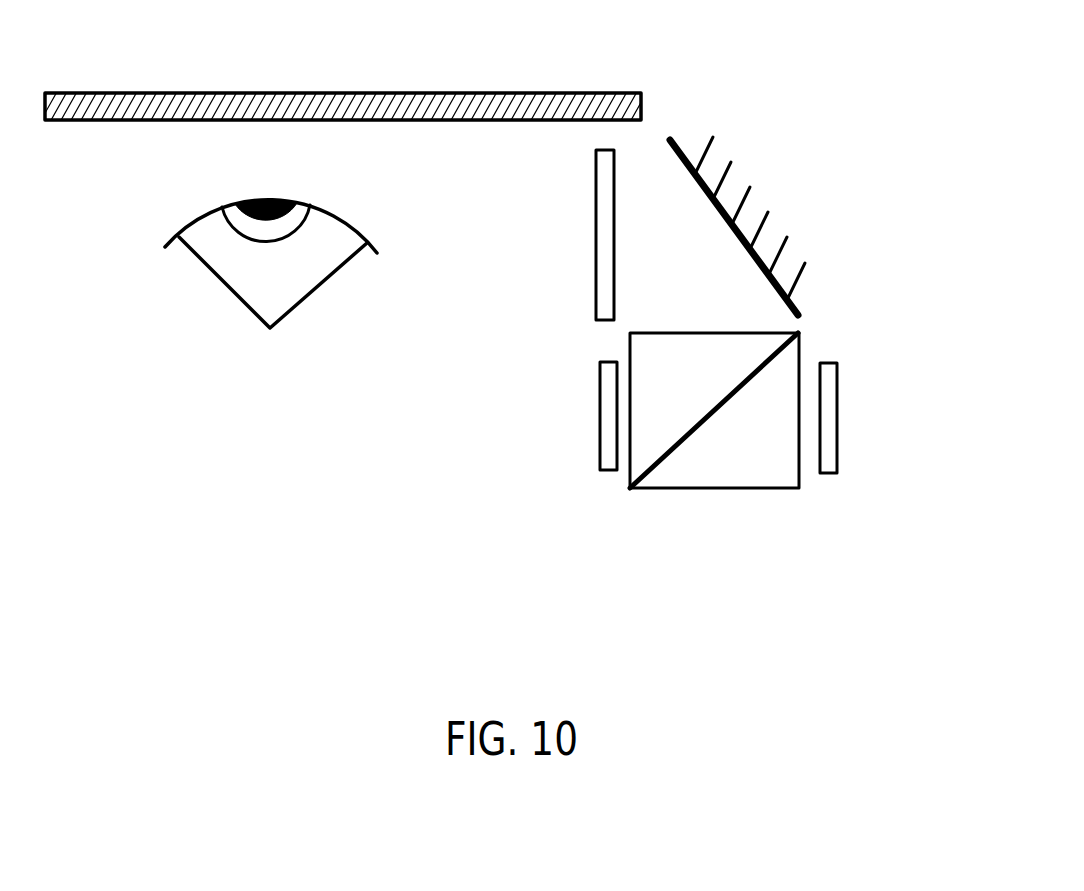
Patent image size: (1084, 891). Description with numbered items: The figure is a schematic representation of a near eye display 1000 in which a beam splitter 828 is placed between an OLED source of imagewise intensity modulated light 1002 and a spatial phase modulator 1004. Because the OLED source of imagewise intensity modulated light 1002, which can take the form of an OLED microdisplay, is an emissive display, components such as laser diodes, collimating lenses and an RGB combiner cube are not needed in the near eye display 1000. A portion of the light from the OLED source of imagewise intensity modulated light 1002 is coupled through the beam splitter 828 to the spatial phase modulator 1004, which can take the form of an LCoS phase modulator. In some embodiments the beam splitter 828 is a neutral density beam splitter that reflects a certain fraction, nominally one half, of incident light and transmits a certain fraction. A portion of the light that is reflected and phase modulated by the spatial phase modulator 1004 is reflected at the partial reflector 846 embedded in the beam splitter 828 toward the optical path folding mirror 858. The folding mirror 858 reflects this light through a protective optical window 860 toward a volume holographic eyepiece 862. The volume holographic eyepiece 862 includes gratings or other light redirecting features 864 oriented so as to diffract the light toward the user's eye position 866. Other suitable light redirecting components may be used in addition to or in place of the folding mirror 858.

The volume holographic eyepiece 862 is at (543, 93).
The light redirecting features 864 is at (122, 93).
The user's eye position 866 is at (302, 203).
The protective optical window 860 is at (598, 245).
The optical path folding mirror 858 is at (743, 182).
The beam splitter 828 is at (670, 475).
The partial reflector 846 is at (708, 410).
The spatial phase modulator 1004 is at (598, 427).
The OLED source of imagewise intensity modulated light 1002 is at (833, 400).
The near eye display 1000 is at (310, 516).